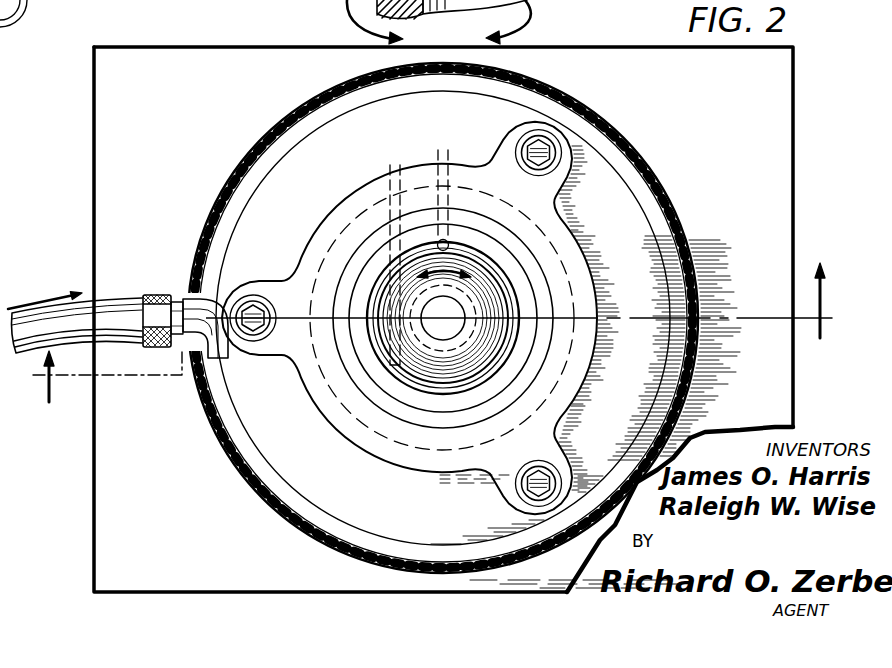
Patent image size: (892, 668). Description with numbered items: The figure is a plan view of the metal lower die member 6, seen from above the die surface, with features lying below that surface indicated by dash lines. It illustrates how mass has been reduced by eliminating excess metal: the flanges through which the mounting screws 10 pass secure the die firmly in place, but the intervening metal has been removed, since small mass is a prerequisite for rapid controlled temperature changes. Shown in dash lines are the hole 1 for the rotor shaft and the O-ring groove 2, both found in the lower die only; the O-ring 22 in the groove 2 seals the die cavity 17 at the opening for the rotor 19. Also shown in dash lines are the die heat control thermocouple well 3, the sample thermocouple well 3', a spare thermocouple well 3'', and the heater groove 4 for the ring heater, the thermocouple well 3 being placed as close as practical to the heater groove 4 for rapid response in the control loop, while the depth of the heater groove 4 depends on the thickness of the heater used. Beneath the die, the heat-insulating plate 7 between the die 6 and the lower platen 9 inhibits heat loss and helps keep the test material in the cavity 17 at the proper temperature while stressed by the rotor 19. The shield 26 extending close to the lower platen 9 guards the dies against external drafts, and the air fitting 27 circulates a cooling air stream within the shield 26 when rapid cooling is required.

The hole 1 is at (434, 338).
The O-ring groove 2 is at (364, 294).
The die heat control thermocouple well 3 is at (423, 318).
The sample thermocouple well 3' is at (451, 184).
The spare thermocouple well 3'' is at (383, 250).
The heater groove 4 is at (341, 410).
The lower die member 6 is at (349, 220).
The heat-insulating plate 7 is at (283, 153).
The lower platen 9 is at (127, 92).
The screw 10 is at (553, 131).
The die cavity 17 is at (425, 376).
The rotor 19 is at (458, 370).
The O-ring 22 is at (443, 318).
The shield 26 is at (252, 485).
The air fitting 27 is at (208, 386).